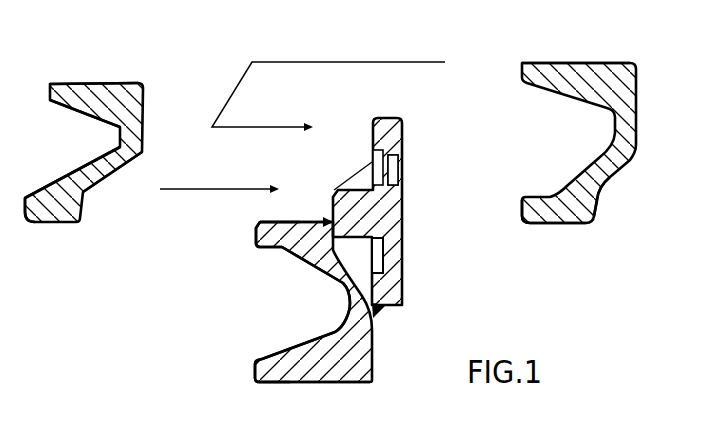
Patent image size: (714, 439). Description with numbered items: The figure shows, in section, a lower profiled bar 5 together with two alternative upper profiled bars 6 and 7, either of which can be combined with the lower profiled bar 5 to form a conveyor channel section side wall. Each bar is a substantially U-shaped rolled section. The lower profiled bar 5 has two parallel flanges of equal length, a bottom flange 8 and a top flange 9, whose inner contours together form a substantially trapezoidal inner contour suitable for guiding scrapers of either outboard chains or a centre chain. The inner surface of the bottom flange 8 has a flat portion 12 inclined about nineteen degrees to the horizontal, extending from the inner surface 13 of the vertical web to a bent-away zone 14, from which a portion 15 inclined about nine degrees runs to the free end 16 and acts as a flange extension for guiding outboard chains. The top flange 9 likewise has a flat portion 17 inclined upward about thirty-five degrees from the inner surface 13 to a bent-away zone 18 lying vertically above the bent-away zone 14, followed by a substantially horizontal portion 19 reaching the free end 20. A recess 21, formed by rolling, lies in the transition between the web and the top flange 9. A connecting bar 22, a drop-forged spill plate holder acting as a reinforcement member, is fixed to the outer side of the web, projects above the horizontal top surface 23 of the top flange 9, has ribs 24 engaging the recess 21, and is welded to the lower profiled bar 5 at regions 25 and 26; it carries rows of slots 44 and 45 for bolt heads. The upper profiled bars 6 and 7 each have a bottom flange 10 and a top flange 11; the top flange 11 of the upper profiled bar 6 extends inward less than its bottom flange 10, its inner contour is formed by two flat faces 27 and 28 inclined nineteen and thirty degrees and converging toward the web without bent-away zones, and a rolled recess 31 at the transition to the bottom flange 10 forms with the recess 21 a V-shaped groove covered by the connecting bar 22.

The lower profiled bar 5 is at (381, 356).
The upper profiled bar 6 is at (150, 110).
The upper profiled bar 7 is at (599, 50).
The bottom flange 8 is at (300, 383).
The top flange 9 is at (288, 227).
The bottom flange 10 is at (53, 223).
The top flange 11 is at (97, 90).
The flat portion 12 is at (293, 347).
The inner surface of the vertical web 13 is at (345, 307).
The bent-away zone 14 is at (282, 357).
The portion 15 is at (257, 360).
The free end 16 is at (255, 380).
The flat portion 17 is at (320, 268).
The bent-away zone 18 is at (282, 250).
The portion 19 is at (262, 248).
The free end 20 is at (255, 233).
The recess 21 is at (603, 193).
The connecting bar 22 is at (403, 208).
The horizontal top surface 23 is at (272, 221).
The ribs 24 is at (347, 197).
The region 25 is at (383, 311).
The region 26 is at (323, 222).
The flat face 27 is at (72, 110).
The flat face 28 is at (67, 178).
The recess 31 is at (107, 182).
The slots 44 is at (393, 168).
The slots 45 is at (392, 265).